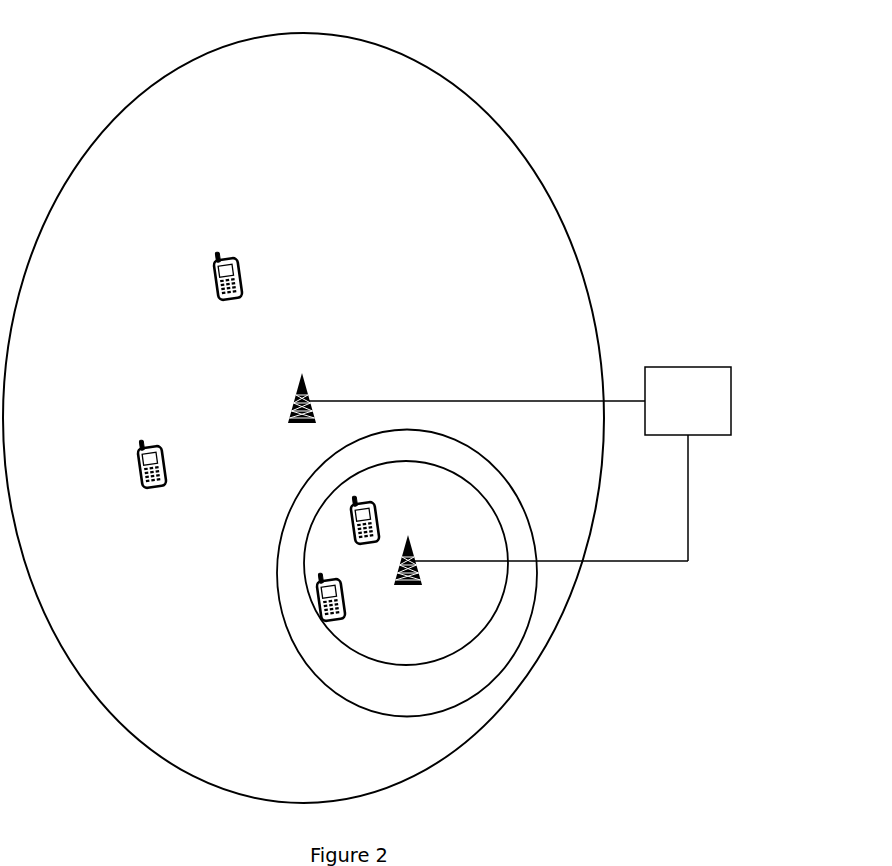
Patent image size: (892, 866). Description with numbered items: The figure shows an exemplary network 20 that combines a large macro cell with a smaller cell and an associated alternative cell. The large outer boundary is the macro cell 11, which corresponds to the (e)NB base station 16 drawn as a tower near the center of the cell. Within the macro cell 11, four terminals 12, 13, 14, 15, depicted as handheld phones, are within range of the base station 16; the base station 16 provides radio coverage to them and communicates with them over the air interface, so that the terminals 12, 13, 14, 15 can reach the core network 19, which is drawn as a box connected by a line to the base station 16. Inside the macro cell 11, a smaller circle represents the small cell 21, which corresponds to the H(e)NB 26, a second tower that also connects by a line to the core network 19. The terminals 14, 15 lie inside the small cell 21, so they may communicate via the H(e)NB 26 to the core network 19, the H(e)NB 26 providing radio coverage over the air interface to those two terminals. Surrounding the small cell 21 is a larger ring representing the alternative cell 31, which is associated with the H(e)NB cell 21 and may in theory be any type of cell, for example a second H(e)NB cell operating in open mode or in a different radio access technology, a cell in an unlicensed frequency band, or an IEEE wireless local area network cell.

The network 20 is at (523, 100).
The macro cell 11 is at (482, 110).
The terminal 12 is at (214, 272).
The terminal 13 is at (137, 460).
The terminal 14 is at (380, 527).
The terminal 15 is at (345, 602).
The (e)NB base station 16 is at (307, 386).
The core network 19 is at (519, 464).
The small cell 21 is at (478, 631).
The H(e)NB 26 is at (413, 546).
The alternative cell 31 is at (323, 672).